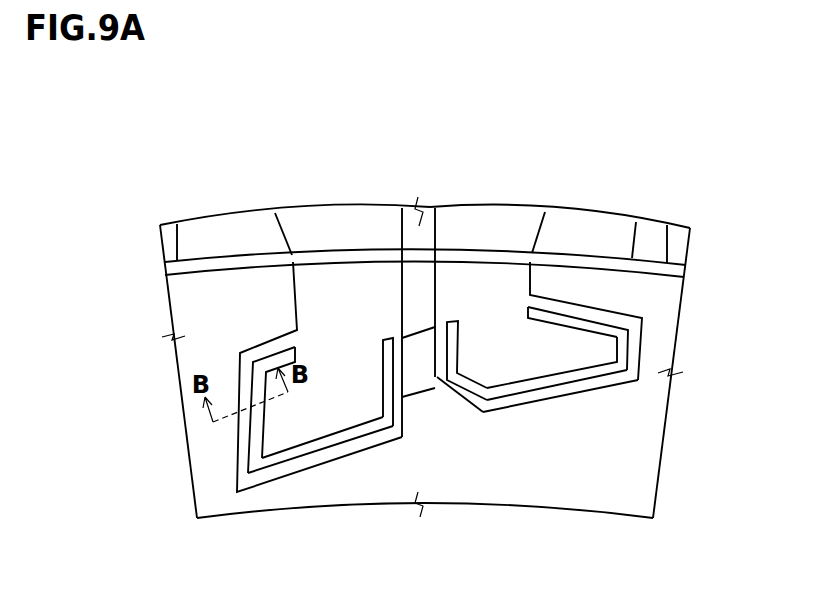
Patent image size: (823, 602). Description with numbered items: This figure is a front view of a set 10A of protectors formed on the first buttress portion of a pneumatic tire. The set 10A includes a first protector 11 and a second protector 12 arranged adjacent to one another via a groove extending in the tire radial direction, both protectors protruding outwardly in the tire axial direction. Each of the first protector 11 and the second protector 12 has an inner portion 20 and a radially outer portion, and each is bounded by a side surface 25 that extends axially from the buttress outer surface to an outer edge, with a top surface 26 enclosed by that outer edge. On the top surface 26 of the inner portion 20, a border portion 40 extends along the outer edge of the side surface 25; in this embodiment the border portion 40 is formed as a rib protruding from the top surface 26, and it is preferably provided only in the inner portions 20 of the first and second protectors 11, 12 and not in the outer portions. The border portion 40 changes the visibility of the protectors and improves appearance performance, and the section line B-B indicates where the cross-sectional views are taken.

The set of protectors 10A is at (398, 190).
The first protector 11 is at (497, 280).
The second protector 12 is at (335, 302).
The inner portion 20 is at (617, 303).
The side surface 25 is at (580, 395).
The top surface 26 is at (570, 347).
The border portion 40 is at (327, 443).